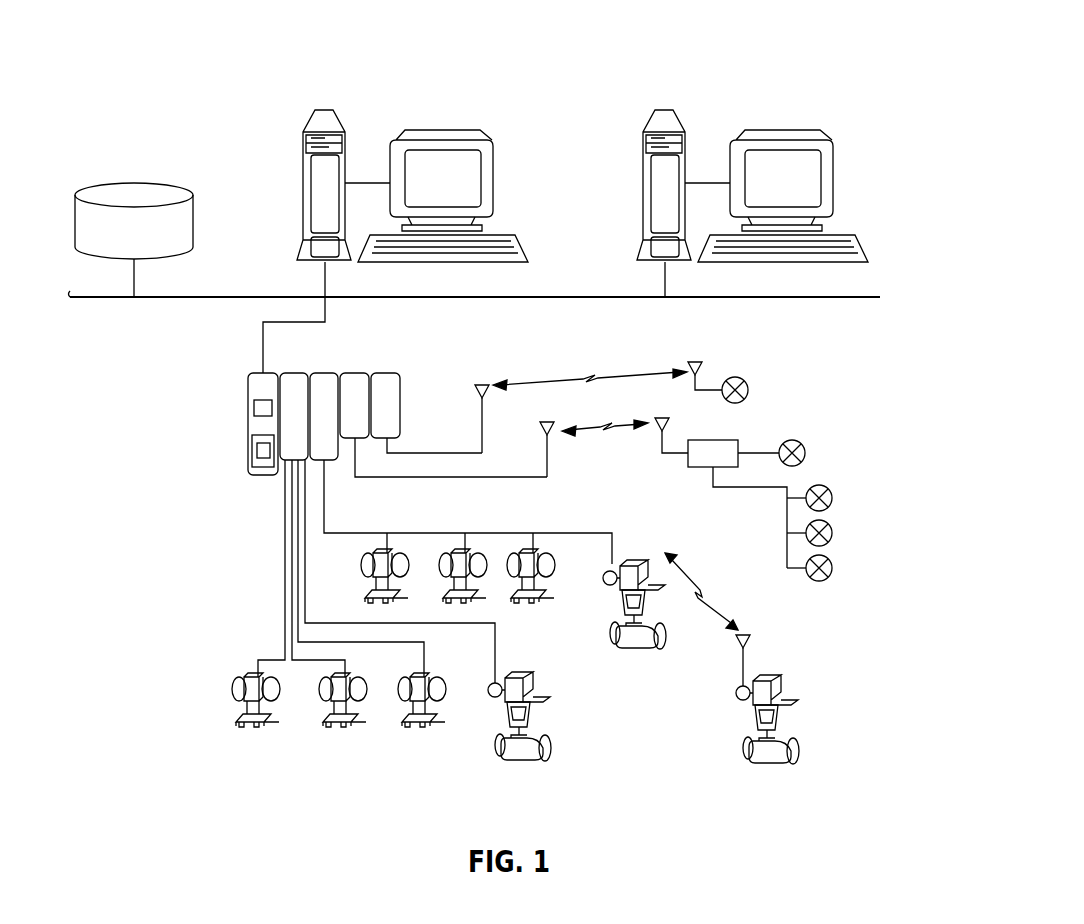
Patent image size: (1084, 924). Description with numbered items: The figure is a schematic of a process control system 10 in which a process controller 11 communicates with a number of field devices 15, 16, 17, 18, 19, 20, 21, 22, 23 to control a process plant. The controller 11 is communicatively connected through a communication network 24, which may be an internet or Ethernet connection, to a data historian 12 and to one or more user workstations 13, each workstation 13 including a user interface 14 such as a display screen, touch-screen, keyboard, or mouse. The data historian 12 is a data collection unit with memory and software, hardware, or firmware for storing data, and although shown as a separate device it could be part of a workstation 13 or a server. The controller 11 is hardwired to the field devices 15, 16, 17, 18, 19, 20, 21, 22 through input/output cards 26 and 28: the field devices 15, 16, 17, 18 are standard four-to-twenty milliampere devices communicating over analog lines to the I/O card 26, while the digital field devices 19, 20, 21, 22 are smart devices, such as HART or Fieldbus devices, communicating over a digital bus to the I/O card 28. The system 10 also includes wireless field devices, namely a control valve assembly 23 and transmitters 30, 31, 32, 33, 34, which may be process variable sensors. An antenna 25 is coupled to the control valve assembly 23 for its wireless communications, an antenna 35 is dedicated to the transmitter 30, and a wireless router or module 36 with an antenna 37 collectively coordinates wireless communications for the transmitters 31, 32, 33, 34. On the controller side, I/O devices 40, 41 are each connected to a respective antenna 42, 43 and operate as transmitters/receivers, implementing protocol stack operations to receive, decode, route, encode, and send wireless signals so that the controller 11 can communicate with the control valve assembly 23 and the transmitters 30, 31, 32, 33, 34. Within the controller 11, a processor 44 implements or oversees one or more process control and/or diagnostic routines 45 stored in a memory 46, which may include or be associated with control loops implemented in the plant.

The process control system 10 is at (597, 82).
The process controller 11 is at (256, 378).
The data historian 12 is at (197, 217).
The user workstation 13 is at (304, 146).
The user interface 14 is at (493, 168).
The field device 15 is at (256, 712).
The field device 16 is at (340, 712).
The field device 17 is at (418, 712).
The field device 18 is at (512, 708).
The digital field device 19 is at (391, 550).
The digital field device 20 is at (469, 550).
The digital field device 21 is at (539, 550).
The digital field device 22 is at (631, 563).
The control valve assembly 23 is at (760, 712).
The communication network 24 is at (193, 300).
The antenna 25 is at (752, 645).
The input/output card 26 is at (292, 388).
The input/output card 28 is at (320, 388).
The transmitter 30 is at (748, 390).
The transmitter 31 is at (805, 453).
The transmitter 32 is at (832, 498).
The transmitter 33 is at (832, 533).
The transmitter 34 is at (832, 568).
The antenna 35 is at (703, 369).
The wireless router or module 36 is at (698, 470).
The antenna 37 is at (670, 432).
The I/O device 40 is at (356, 388).
The I/O device 41 is at (388, 388).
The antenna 42 is at (546, 460).
The antenna 43 is at (485, 414).
The processor 44 is at (252, 407).
The process control and/or diagnostic routines 45 is at (255, 451).
The memory 46 is at (263, 470).